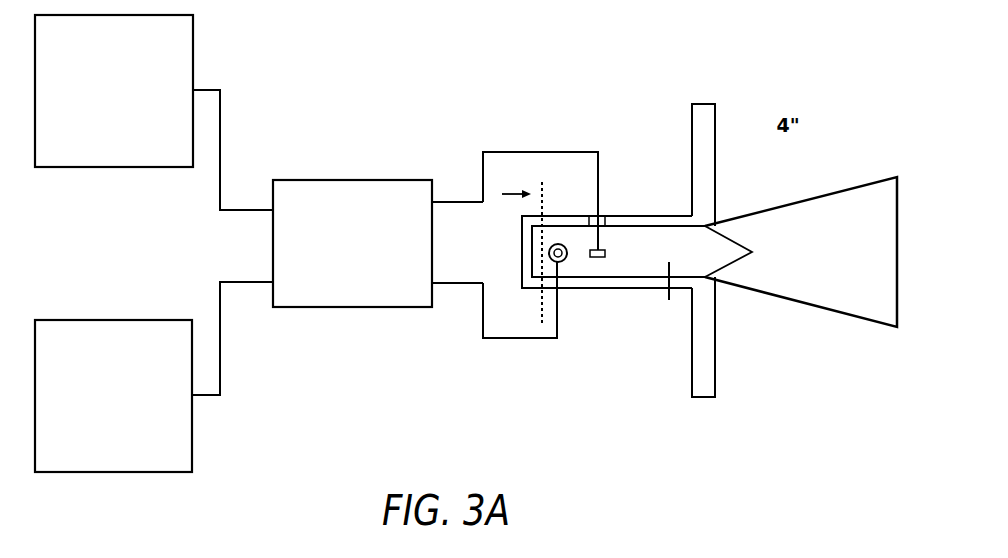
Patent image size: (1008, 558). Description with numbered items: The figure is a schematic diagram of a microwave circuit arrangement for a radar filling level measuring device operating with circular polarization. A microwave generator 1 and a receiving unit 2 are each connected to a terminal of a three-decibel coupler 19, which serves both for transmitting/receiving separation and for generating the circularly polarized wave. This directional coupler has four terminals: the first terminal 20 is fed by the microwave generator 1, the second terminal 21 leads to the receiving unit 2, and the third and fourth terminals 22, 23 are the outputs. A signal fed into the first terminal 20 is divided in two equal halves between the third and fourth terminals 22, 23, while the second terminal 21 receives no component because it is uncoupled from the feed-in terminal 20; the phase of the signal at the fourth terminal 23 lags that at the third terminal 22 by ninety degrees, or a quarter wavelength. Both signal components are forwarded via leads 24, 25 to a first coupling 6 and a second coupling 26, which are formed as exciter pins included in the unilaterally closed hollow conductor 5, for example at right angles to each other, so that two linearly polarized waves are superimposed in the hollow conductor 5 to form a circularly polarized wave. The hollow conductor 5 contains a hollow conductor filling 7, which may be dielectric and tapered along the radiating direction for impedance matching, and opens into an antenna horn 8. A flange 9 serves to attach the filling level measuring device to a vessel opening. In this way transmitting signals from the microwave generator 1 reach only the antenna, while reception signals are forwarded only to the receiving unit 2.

The microwave generator 1 is at (197, 50).
The receiving unit 2 is at (197, 435).
The 3 dB coupler 19 is at (350, 180).
The first terminal 20 is at (262, 198).
The second terminal 21 is at (258, 290).
The third terminal 22 is at (442, 195).
The fourth terminal 23 is at (438, 288).
The lead 24 is at (535, 148).
The lead 25 is at (520, 343).
The hollow conductor 5 is at (633, 285).
The hollow conductor coupling 6 is at (605, 207).
The second coupling 26 is at (560, 262).
The hollow conductor filling 7 is at (666, 296).
The antenna horn 8 is at (822, 310).
The flange 9 is at (702, 338).